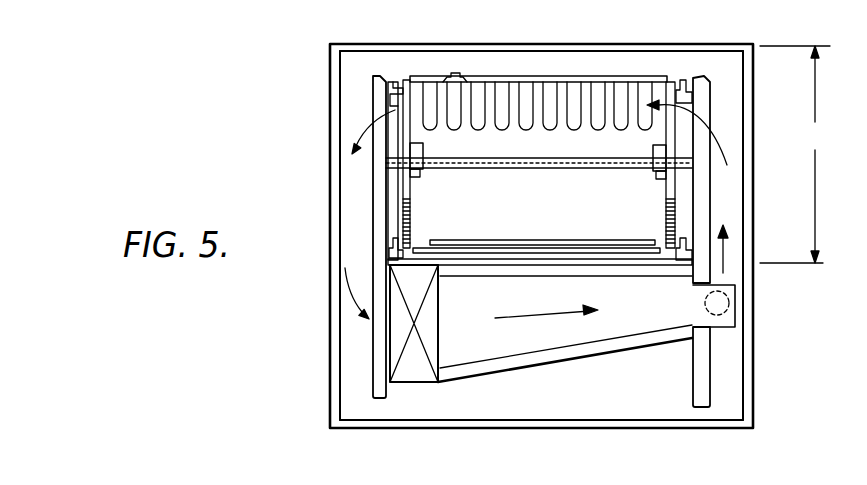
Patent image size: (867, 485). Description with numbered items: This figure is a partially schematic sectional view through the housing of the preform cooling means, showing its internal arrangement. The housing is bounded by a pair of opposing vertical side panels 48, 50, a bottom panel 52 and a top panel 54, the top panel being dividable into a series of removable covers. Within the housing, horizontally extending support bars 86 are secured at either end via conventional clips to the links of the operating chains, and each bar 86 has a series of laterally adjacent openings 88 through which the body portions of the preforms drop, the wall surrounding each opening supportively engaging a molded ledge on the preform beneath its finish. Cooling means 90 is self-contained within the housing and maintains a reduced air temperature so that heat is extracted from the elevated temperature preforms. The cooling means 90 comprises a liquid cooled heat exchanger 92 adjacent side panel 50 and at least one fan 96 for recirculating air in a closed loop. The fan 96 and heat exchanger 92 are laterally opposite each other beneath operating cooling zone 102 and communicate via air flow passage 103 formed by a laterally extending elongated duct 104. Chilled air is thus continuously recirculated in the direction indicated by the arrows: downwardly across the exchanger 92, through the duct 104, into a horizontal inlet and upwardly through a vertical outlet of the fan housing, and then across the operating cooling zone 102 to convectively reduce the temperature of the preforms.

The vertical side panel 48 is at (753, 223).
The vertical side panel 50 is at (331, 192).
The bottom panel 52 is at (547, 421).
The top panel 54 is at (607, 44).
The support bar 86 is at (529, 80).
The opening 88 is at (463, 75).
The cooling means 90 is at (615, 391).
The liquid cooled heat exchanger 92 is at (412, 373).
The fan 96 is at (735, 303).
The operating cooling zone 102 is at (798, 154).
The air flow passage 103 is at (648, 313).
The elongated duct 104 is at (558, 273).